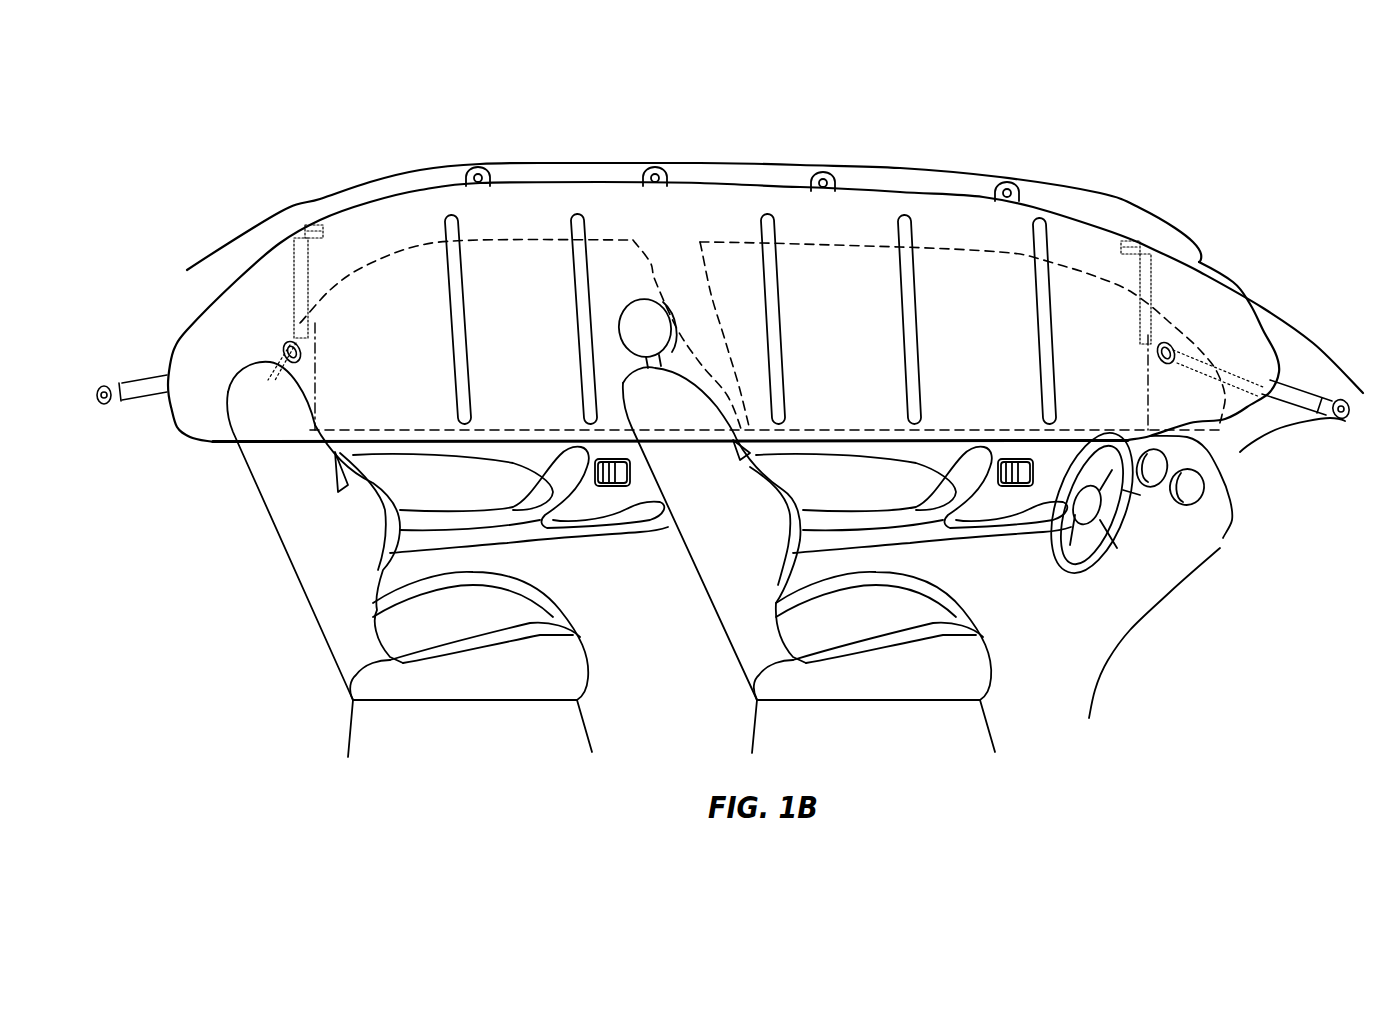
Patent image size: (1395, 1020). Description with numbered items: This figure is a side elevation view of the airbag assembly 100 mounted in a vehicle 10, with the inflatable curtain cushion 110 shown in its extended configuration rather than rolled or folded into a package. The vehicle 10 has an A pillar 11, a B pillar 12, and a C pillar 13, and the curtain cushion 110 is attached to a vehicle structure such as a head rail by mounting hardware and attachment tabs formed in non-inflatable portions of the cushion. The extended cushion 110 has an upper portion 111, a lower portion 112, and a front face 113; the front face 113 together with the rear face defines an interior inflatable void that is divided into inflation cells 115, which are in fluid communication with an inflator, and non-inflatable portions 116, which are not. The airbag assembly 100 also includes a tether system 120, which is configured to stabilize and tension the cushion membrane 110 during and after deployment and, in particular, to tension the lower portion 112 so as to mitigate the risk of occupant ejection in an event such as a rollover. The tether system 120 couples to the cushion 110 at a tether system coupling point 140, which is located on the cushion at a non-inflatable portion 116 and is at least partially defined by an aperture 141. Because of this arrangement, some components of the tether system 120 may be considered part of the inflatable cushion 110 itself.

The vehicle 10 is at (1024, 176).
The A pillar 11 is at (1250, 310).
The B pillar 12 is at (716, 320).
The C pillar 13 is at (204, 256).
The airbag assembly 100 is at (1194, 161).
The inflatable curtain cushion 110 is at (716, 188).
The upper portion 111 is at (445, 197).
The lower portion 112 is at (482, 424).
The front face 113 is at (505, 334).
The inflation cells 115 is at (863, 277).
The non-inflatable portions 116 is at (640, 175).
The tether system 120 is at (163, 383).
The tether system coupling point 140 is at (282, 378).
The aperture 141 is at (290, 347).